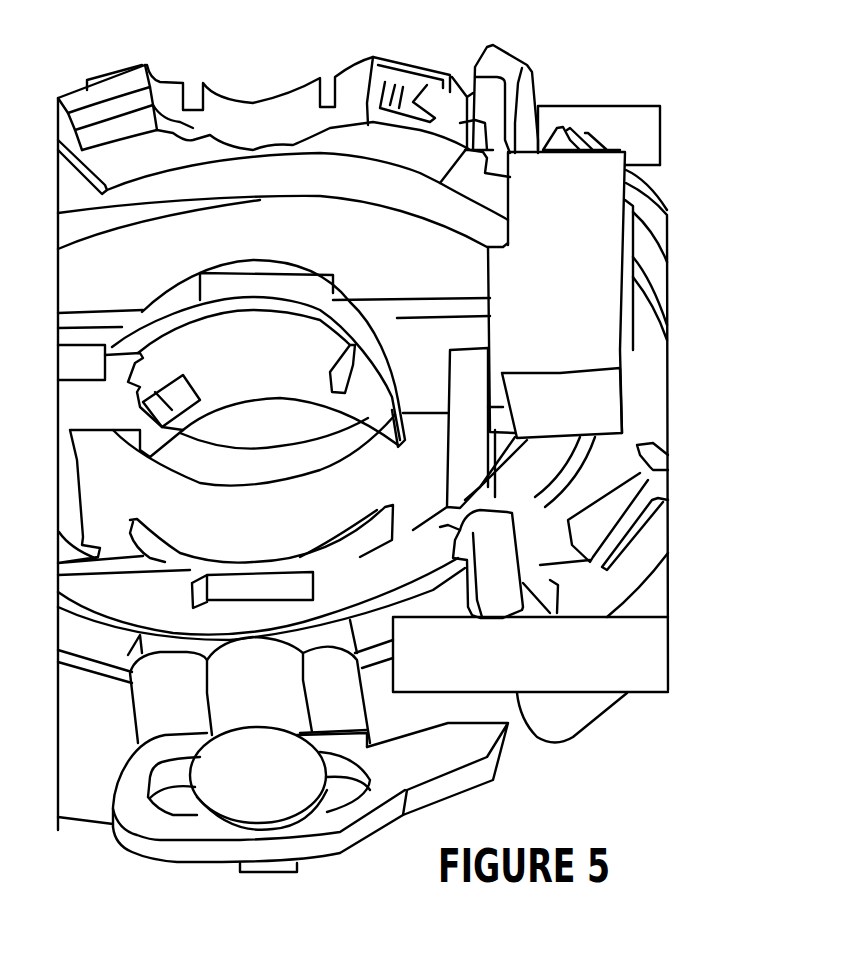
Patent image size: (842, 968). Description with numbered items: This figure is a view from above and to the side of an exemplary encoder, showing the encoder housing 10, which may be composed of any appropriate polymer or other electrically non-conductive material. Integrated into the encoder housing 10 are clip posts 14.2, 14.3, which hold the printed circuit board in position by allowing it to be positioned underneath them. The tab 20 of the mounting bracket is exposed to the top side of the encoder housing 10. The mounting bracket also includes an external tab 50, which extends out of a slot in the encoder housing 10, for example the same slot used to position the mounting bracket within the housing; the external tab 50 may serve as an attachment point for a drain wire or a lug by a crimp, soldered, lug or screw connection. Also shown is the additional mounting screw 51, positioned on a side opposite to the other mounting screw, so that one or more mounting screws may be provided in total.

The encoder housing 10 is at (645, 335).
The tab 20 is at (420, 97).
The clip post 14.2 is at (527, 92).
The clip post 14.3 is at (505, 547).
The external tab 50 is at (647, 120).
The additional mounting screw 51 is at (270, 777).